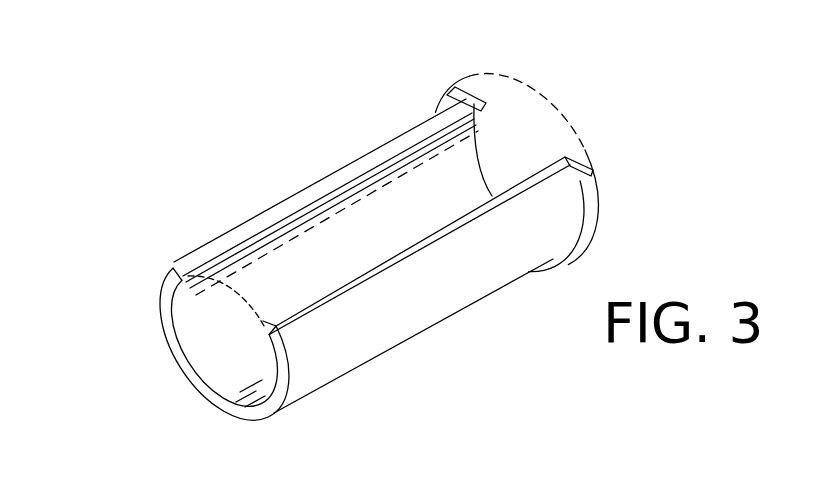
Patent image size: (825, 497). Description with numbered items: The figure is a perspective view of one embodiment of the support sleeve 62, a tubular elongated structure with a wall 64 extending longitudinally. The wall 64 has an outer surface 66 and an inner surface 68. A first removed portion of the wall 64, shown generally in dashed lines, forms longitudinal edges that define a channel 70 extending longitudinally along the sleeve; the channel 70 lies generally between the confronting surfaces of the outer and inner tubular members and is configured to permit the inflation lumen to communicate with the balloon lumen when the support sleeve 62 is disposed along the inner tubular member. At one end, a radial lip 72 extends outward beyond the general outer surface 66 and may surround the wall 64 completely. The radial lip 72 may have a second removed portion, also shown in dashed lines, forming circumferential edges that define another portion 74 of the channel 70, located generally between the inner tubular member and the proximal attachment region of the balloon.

The support sleeve 62 is at (290, 142).
The wall 64 is at (424, 291).
The outer surface 66 is at (360, 357).
The inner surface 68 is at (233, 372).
The channel 70 is at (352, 210).
The radial lip 72 is at (578, 234).
The portion of channel 74 is at (557, 99).